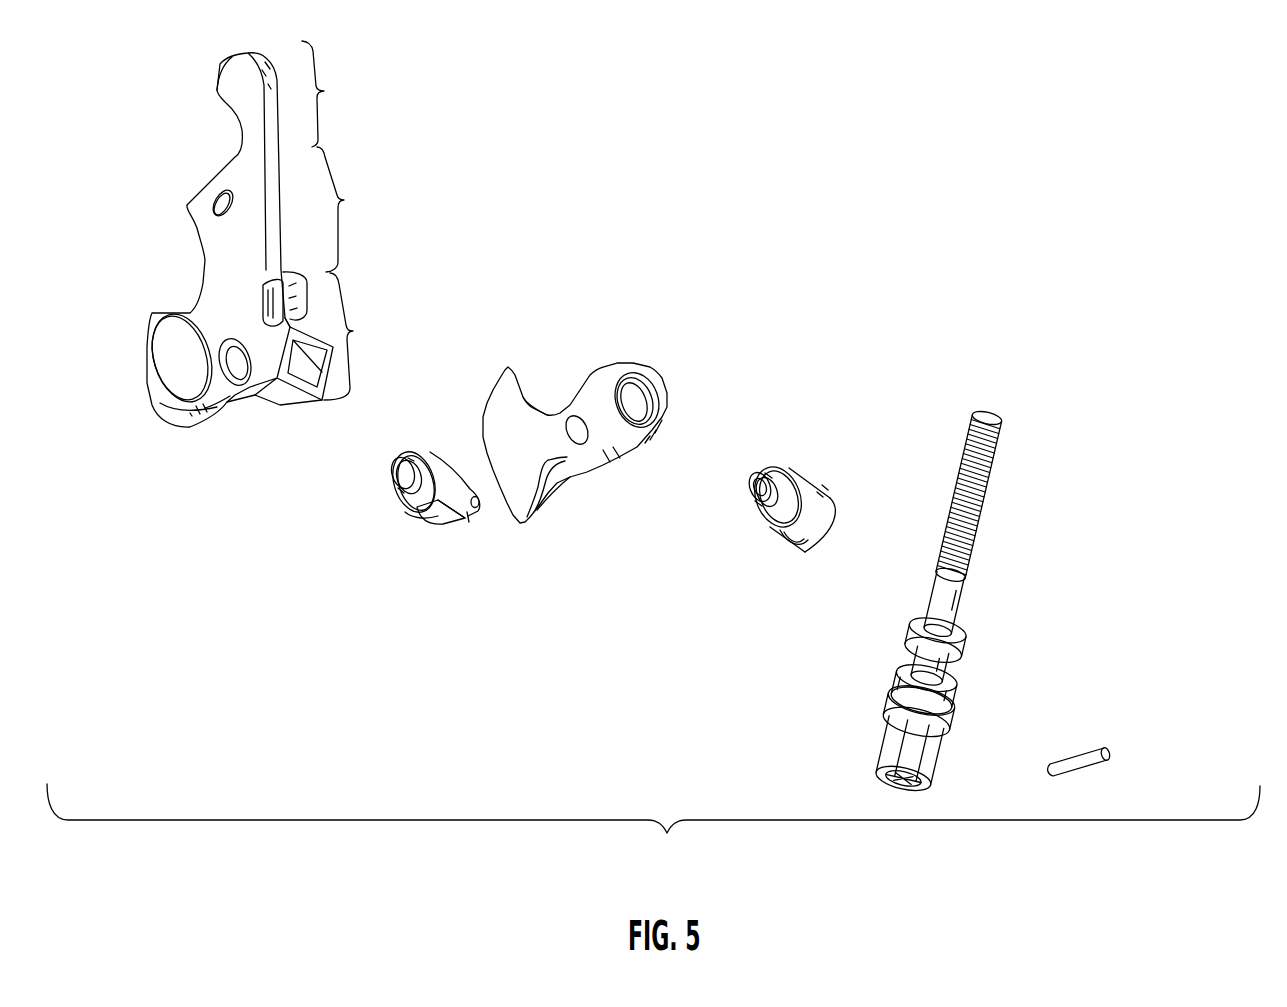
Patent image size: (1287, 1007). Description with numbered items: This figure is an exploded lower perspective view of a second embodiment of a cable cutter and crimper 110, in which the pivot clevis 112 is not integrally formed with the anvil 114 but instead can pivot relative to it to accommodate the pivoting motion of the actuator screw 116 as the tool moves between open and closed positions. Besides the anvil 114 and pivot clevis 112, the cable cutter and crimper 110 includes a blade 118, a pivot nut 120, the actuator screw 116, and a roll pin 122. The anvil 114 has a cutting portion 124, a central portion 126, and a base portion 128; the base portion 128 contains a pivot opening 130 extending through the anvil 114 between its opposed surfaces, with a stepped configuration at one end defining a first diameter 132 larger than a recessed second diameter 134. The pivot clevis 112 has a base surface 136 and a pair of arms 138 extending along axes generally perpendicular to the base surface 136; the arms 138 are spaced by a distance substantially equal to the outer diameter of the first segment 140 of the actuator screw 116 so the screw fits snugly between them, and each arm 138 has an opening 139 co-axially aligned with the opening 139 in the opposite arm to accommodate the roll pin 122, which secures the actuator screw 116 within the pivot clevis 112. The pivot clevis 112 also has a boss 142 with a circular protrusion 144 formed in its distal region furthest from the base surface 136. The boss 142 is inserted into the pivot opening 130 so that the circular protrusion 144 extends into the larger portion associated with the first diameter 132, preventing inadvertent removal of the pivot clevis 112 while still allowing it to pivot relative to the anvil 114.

The cable cutter and crimper 110 is at (653, 829).
The pivot clevis 112 is at (386, 490).
The anvil 114 is at (283, 40).
The actuator screw 116 is at (990, 602).
The blade 118 is at (578, 495).
The pivot nut 120 is at (755, 524).
The roll pin 122 is at (1100, 748).
The cutting portion 124 is at (332, 94).
The central portion 126 is at (347, 209).
The base portion 128 is at (358, 336).
The pivot opening 130 is at (231, 370).
The first diameter 132 is at (242, 338).
The second diameter 134 is at (227, 410).
The base surface 136 is at (430, 454).
The arms 138 is at (437, 505).
The opening 139 is at (495, 387).
The first segment 140 is at (935, 660).
The boss 142 is at (757, 487).
The circular protrusion 144 is at (768, 474).